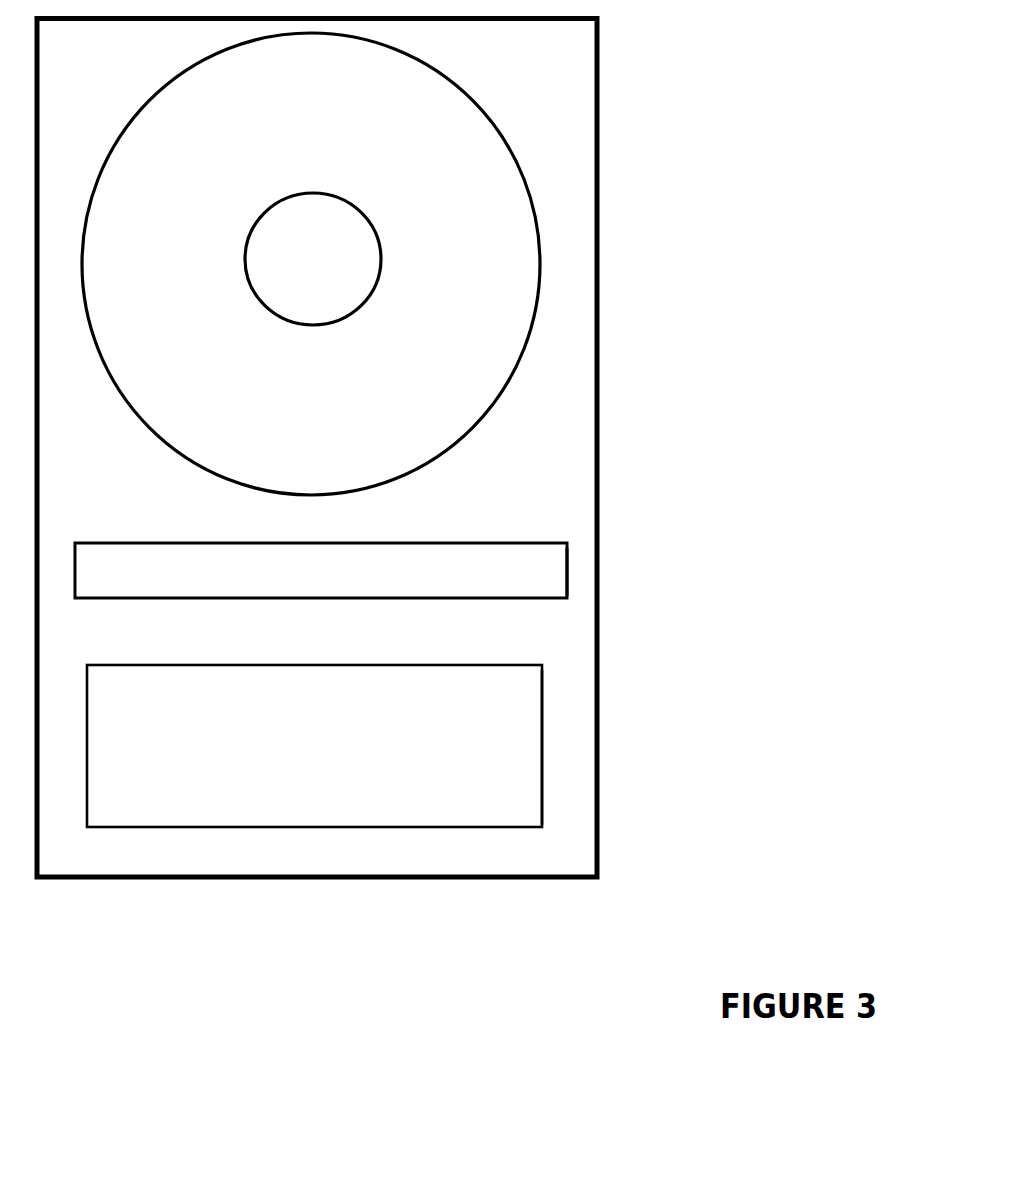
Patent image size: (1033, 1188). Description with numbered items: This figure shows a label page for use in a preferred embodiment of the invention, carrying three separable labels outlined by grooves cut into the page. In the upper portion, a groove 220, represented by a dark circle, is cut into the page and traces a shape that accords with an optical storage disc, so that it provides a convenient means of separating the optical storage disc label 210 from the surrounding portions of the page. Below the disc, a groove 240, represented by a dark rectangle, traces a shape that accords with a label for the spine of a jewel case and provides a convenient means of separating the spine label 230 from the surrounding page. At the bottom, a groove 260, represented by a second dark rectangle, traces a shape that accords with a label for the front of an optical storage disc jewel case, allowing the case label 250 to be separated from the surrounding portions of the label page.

The optical storage disc label 210 is at (469, 226).
The groove 220 is at (540, 250).
The spine label 230 is at (500, 569).
The groove 240 is at (568, 577).
The case label 250 is at (517, 689).
The groove 260 is at (543, 696).